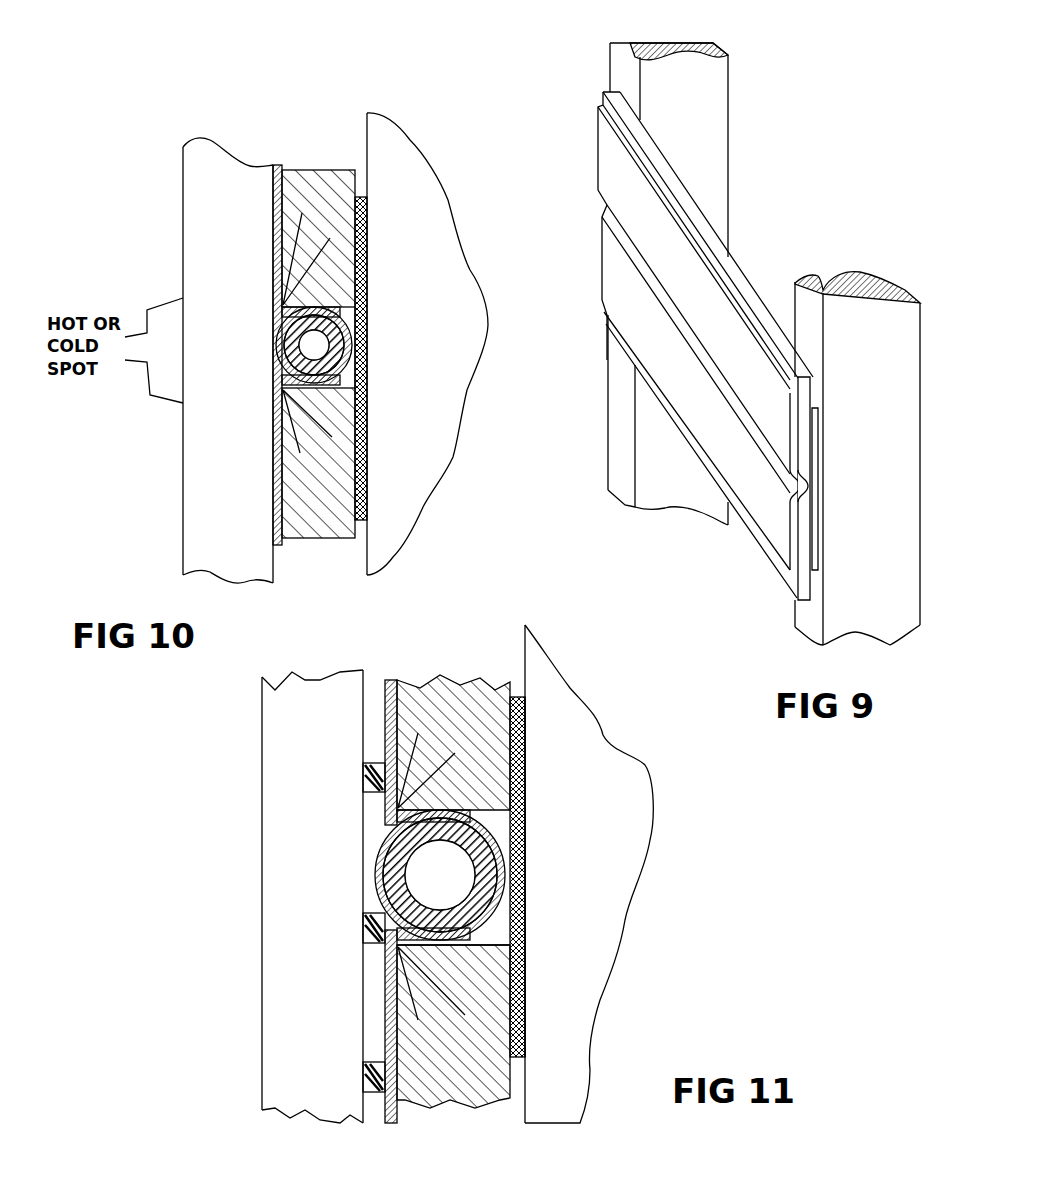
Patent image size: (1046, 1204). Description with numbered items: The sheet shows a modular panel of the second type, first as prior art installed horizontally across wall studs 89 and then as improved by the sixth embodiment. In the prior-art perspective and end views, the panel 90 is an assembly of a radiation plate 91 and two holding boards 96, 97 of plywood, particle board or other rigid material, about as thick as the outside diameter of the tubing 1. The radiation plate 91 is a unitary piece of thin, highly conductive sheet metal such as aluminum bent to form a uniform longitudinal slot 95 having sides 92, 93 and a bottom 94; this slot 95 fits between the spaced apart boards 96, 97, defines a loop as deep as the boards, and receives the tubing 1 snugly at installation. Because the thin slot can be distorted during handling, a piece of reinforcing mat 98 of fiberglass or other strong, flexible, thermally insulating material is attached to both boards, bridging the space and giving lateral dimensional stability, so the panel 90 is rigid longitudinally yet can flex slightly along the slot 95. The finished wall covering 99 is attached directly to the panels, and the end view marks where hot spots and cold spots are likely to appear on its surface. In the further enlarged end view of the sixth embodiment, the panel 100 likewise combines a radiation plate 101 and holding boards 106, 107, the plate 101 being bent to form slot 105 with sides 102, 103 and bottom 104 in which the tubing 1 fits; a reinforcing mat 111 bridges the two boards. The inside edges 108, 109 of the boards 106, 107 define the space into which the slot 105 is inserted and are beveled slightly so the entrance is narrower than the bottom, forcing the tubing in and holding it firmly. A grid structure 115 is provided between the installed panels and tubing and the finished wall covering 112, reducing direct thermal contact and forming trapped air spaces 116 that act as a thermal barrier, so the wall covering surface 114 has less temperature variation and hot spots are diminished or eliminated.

In FIG. 10, the tubing 1 is at (278, 358).
In FIG. 11, the tubing 1 is at (383, 878).
In FIG. 10, the studs 89 is at (472, 338).
In FIG. 9, the studs 89 is at (713, 83).
In FIG. 11, the studs 89 is at (598, 874).
In FIG. 10, the panel 90 is at (318, 317).
In FIG. 9, the panel 90 is at (673, 346).
In FIG. 10, the radiation plate 91 is at (274, 245).
In FIG. 10, the slot side 92 is at (273, 330).
In FIG. 10, the slot side 93 is at (272, 380).
In FIG. 10, the slot bottom 94 is at (362, 377).
In FIG. 10, the slot 95 is at (279, 353).
In FIG. 9, the slot 95 is at (648, 270).
In FIG. 10, the holding board 96 is at (320, 168).
In FIG. 10, the holding board 97 is at (312, 547).
In FIG. 9, the holding board 97 is at (620, 175).
In FIG. 10, the reinforcing mat 98 is at (367, 268).
In FIG. 10, the finished wall covering 99 is at (218, 132).
In FIG. 11, the panel 100 is at (442, 870).
In FIG. 11, the radiation plate 101 is at (383, 725).
In FIG. 11, the slot side 102 is at (383, 842).
In FIG. 11, the slot side 103 is at (383, 913).
In FIG. 11, the slot bottom 104 is at (538, 928).
In FIG. 11, the slot 105 is at (396, 875).
In FIG. 11, the holding board 106 is at (406, 681).
In FIG. 11, the holding board 107 is at (495, 1044).
In FIG. 11, the inside edge 108 is at (513, 833).
In FIG. 11, the inside edge 109 is at (483, 937).
In FIG. 11, the reinforcing mat 111 is at (558, 877).
In FIG. 11, the finished wall covering 112 is at (264, 896).
In FIG. 11, the wall covering surface 114 is at (277, 842).
In FIG. 11, the grid structure 115 is at (374, 856).
In FIG. 11, the trapped air spaces 116 is at (372, 990).